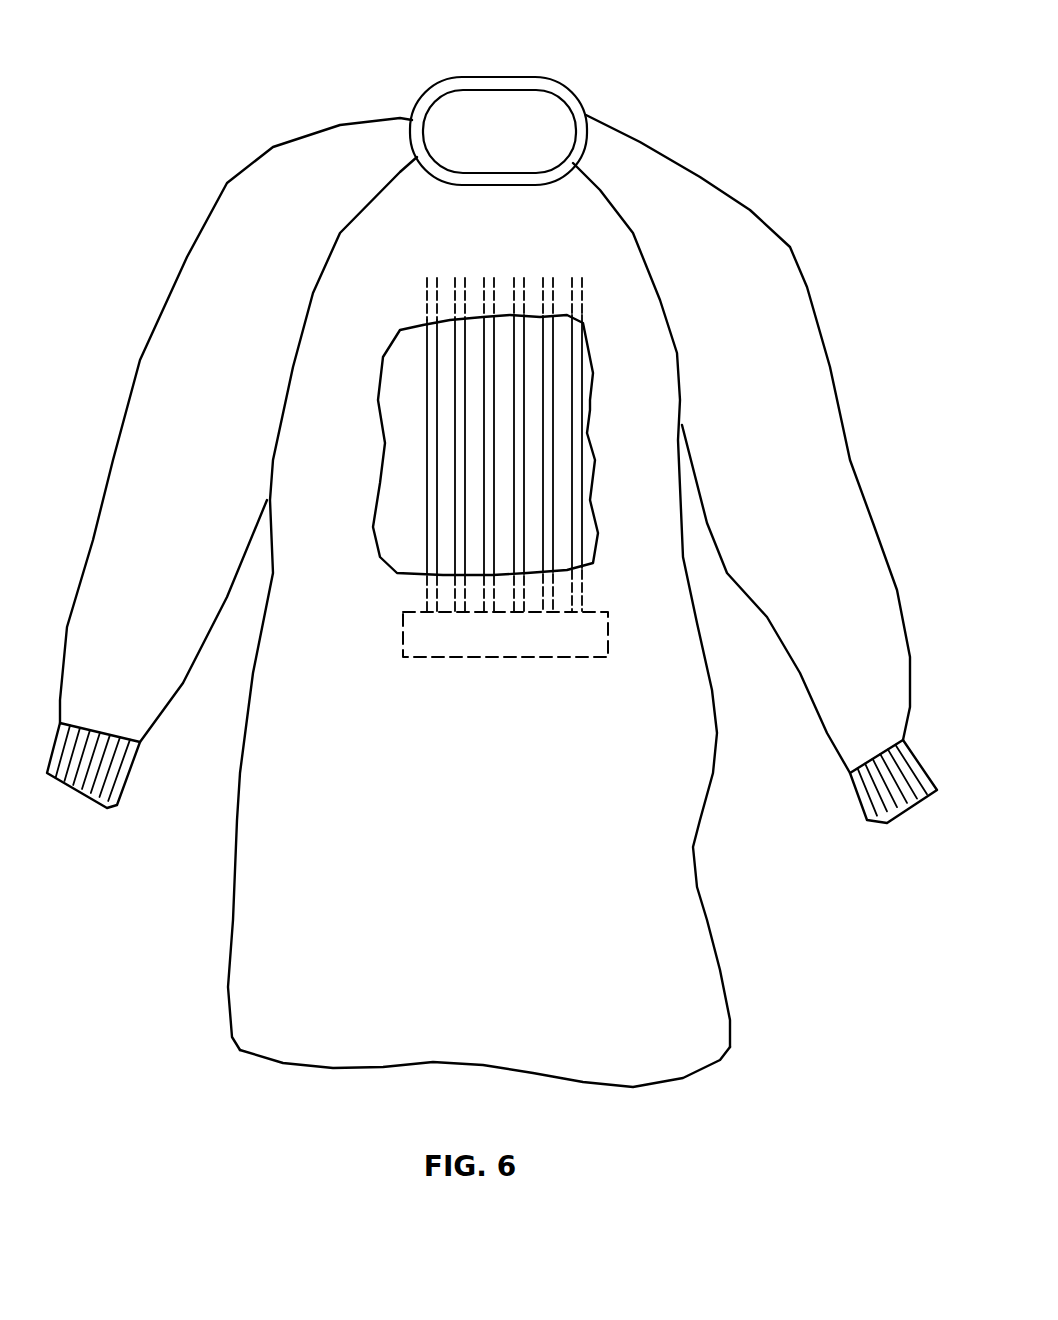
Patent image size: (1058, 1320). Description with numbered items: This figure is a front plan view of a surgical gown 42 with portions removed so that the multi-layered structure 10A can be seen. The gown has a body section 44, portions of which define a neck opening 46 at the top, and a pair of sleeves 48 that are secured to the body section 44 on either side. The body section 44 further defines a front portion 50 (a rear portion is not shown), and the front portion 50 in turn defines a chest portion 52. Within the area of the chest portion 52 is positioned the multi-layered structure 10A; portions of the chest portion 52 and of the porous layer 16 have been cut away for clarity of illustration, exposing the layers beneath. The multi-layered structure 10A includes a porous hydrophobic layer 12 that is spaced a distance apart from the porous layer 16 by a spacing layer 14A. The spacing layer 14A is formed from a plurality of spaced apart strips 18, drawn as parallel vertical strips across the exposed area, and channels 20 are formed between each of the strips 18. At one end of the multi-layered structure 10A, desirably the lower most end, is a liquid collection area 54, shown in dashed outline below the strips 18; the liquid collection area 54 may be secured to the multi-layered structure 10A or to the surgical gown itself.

The multi-layered structure 10A is at (501, 460).
The porous hydrophobic layer 12 is at (417, 515).
The spacing layer 14A is at (565, 348).
The porous layer 16 is at (393, 357).
The strips 18 is at (520, 347).
The channels 20 is at (473, 344).
The surgical gown 42 is at (492, 552).
The body section 44 is at (456, 622).
The neck opening 46 is at (465, 92).
The sleeves 48 is at (183, 262).
The front portion 50 is at (657, 690).
The chest portion 52 is at (336, 447).
The liquid collection area 54 is at (578, 658).